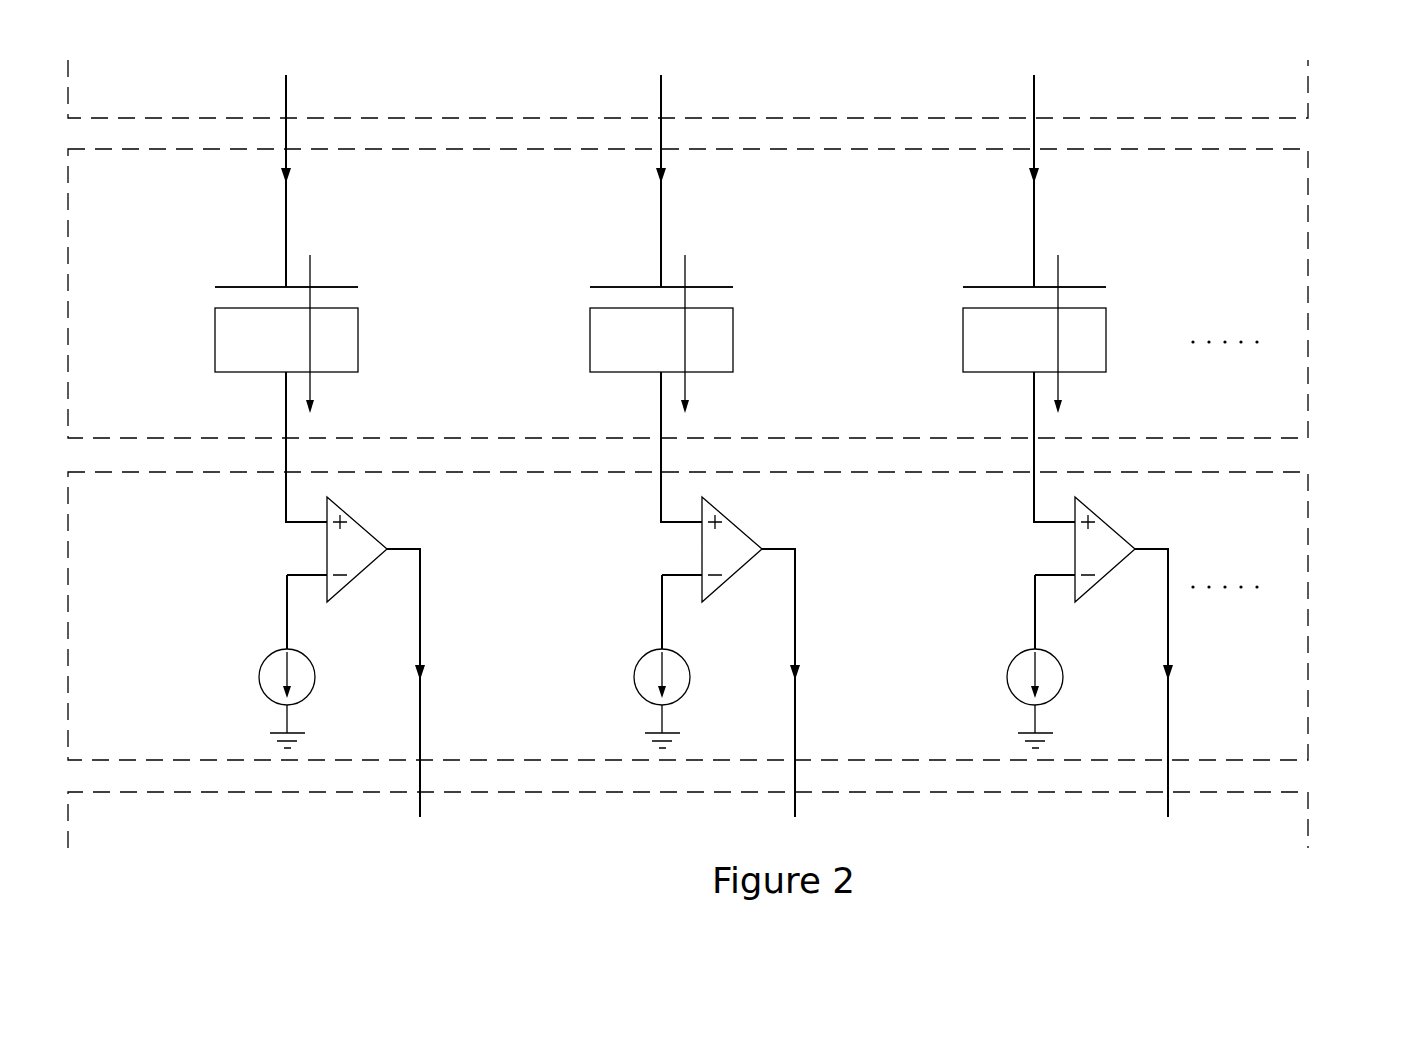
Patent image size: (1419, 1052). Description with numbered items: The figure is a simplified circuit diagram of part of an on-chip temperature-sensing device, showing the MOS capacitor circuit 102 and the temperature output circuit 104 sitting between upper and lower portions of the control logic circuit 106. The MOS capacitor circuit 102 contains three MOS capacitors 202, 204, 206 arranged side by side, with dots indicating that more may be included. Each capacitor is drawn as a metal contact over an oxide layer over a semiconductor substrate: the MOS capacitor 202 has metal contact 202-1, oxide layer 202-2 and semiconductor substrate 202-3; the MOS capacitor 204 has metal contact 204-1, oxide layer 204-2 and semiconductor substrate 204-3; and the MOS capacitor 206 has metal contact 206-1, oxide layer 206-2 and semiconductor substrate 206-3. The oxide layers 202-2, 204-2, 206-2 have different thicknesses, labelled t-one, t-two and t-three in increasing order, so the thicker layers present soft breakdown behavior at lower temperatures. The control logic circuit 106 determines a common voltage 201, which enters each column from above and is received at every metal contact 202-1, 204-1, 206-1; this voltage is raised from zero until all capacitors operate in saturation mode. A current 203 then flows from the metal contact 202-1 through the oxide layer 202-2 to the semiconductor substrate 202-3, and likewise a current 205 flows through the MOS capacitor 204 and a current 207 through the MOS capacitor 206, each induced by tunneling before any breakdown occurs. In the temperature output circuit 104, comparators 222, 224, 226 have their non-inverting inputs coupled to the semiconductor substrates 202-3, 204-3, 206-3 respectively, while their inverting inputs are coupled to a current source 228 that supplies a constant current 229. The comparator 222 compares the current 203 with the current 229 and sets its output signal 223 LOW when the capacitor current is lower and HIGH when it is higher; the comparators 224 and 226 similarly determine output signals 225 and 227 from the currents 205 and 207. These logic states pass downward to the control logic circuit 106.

The control logic circuit 106 is at (155, 93).
The MOS capacitor circuit 102 is at (1283, 287).
The temperature output circuit 104 is at (1283, 645).
The common voltage 201 is at (346, 186).
The MOS capacitor 202 is at (275, 290).
The metal contact 202-1 is at (230, 285).
The oxide layer 202-2 is at (230, 298).
The semiconductor substrate 202-3 is at (215, 355).
The current 203 is at (373, 408).
The MOS capacitor 204 is at (650, 290).
The metal contact 204-1 is at (605, 285).
The oxide layer 204-2 is at (605, 298).
The semiconductor substrate 204-3 is at (590, 355).
The current 205 is at (748, 408).
The MOS capacitor 206 is at (1023, 290).
The metal contact 206-1 is at (978, 285).
The oxide layer 206-2 is at (978, 298).
The semiconductor substrate 206-3 is at (963, 355).
The current 207 is at (1121, 408).
The comparator 222 is at (420, 522).
The output signal 223 is at (482, 683).
The comparator 224 is at (795, 522).
The output signal 225 is at (857, 683).
The comparator 226 is at (1168, 522).
The output signal 227 is at (1238, 683).
The current source 228 is at (237, 697).
The current 229 is at (1019, 618).